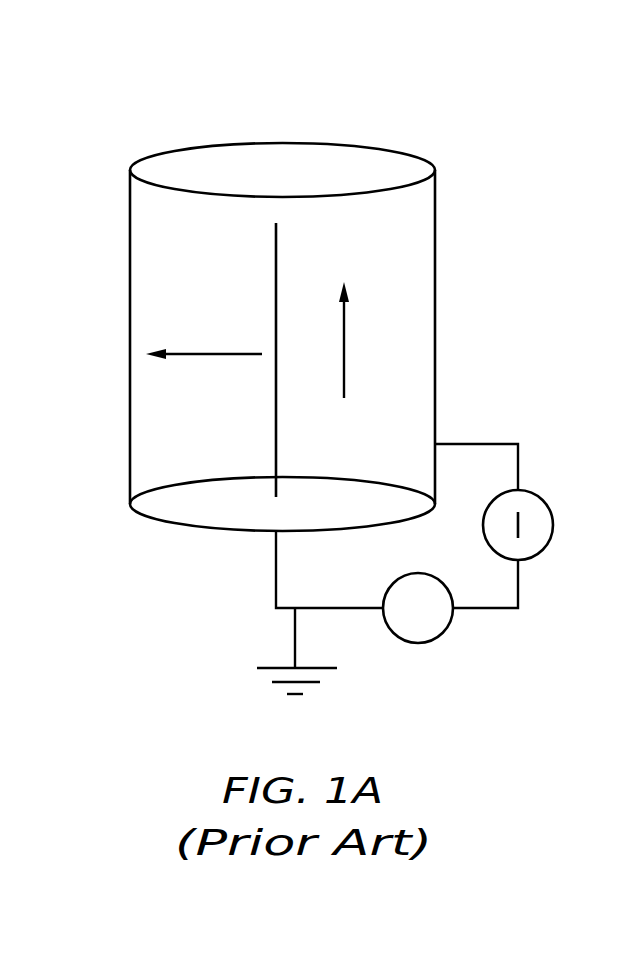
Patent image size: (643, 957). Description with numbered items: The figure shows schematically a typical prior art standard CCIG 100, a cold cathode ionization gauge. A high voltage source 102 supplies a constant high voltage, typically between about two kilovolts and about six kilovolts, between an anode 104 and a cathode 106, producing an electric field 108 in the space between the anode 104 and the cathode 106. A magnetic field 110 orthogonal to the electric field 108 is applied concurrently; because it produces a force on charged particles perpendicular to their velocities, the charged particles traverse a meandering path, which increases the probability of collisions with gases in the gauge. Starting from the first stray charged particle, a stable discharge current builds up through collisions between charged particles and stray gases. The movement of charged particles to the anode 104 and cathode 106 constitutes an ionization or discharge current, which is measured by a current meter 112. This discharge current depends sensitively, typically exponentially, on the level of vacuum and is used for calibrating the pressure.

The standard CCIG 100 is at (537, 78).
The high voltage source 102 is at (420, 645).
The anode 104 is at (278, 260).
The cathode 106 is at (435, 227).
The electric field 108 is at (178, 355).
The magnetic field 110 is at (344, 328).
The current meter 112 is at (540, 553).